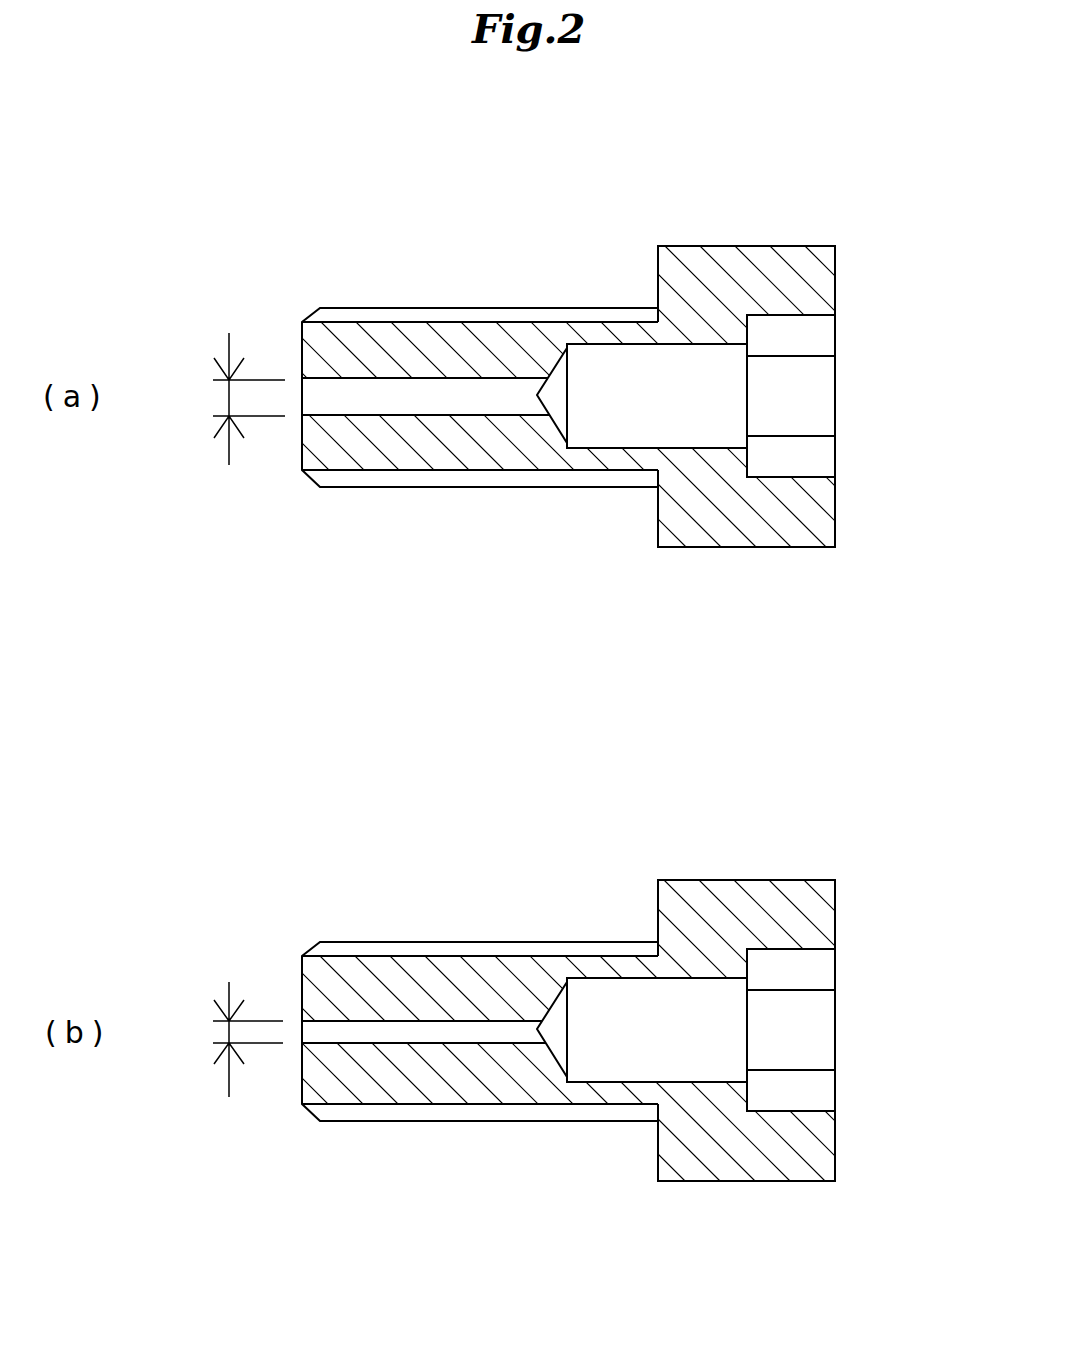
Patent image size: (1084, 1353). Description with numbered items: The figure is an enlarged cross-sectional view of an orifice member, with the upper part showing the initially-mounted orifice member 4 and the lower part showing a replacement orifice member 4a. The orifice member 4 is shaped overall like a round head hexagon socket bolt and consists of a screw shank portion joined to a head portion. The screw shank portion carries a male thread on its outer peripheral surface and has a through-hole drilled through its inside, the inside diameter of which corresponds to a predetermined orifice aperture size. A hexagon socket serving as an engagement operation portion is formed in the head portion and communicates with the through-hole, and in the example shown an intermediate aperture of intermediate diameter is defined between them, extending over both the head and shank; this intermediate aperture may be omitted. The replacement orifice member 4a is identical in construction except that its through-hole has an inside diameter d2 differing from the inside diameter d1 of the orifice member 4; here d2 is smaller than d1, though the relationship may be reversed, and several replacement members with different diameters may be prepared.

The orifice member 4 is at (338, 263).
The replacement orifice member 4a is at (542, 1010).
The inside diameter of the through-hole of the orifice member d1 is at (228, 397).
The inside diameter of the through-hole of the replacement orifice member d2 is at (210, 1048).